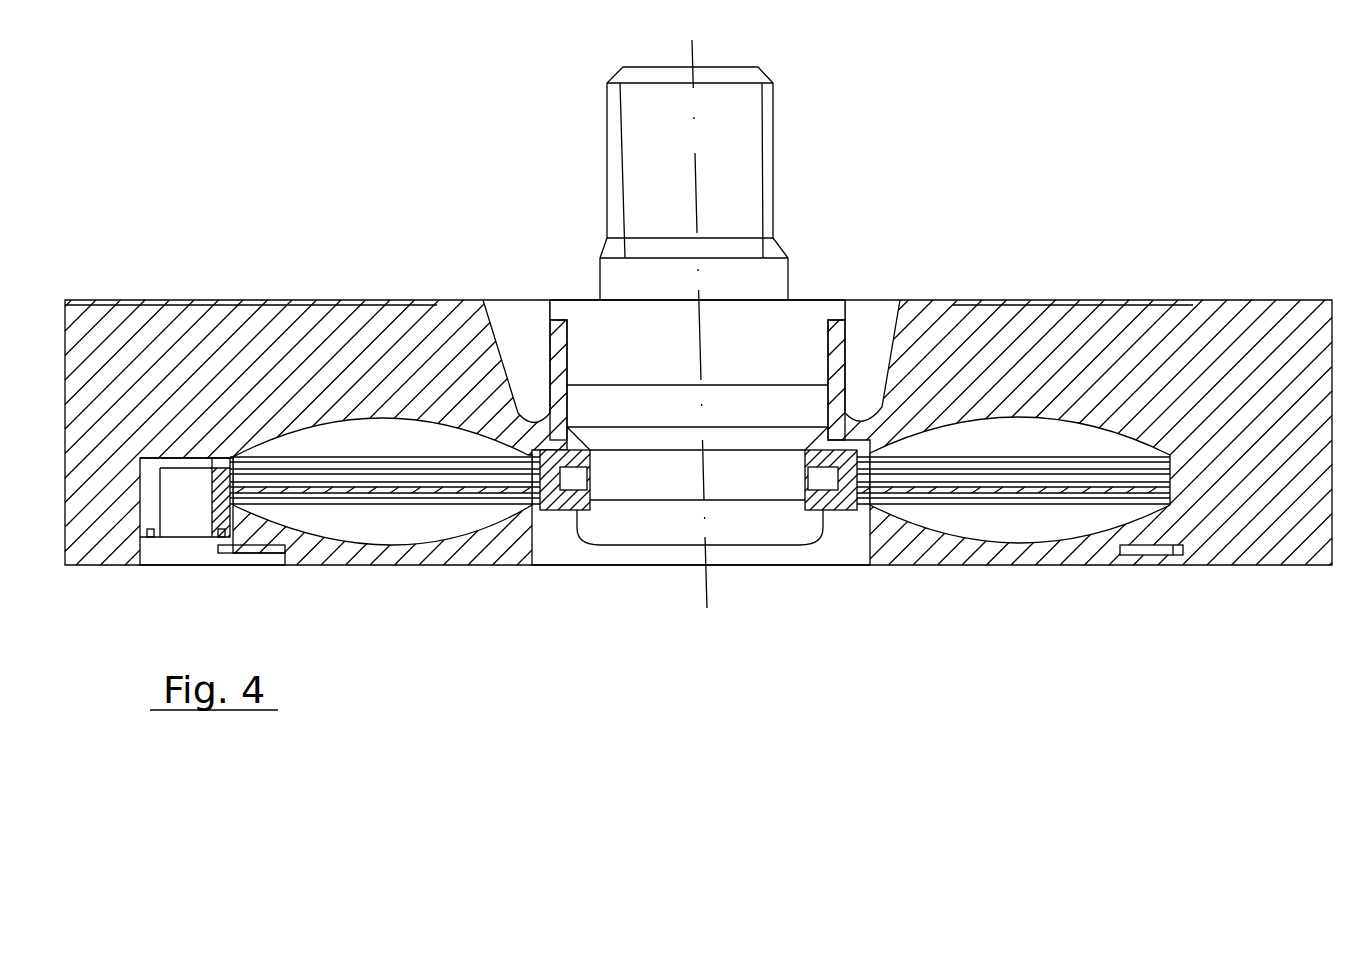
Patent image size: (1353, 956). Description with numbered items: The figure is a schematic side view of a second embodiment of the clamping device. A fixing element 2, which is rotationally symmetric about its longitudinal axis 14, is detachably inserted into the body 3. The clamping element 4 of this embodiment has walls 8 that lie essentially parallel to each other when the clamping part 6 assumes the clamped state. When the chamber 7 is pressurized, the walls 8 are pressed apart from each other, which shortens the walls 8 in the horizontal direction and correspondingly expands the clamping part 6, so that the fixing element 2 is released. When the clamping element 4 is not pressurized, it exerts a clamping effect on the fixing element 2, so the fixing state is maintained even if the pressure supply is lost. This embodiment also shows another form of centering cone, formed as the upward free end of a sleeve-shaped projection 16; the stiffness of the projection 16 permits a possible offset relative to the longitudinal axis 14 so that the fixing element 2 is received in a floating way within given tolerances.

The fixing element 2 is at (740, 160).
The body 3 is at (473, 317).
The clamping element 4 is at (998, 500).
The clamping part 6 is at (850, 503).
The chamber 7 is at (967, 483).
The walls 8 is at (355, 457).
The longitudinal axis 14 is at (695, 50).
The sleeve-shaped projection 16 is at (867, 353).